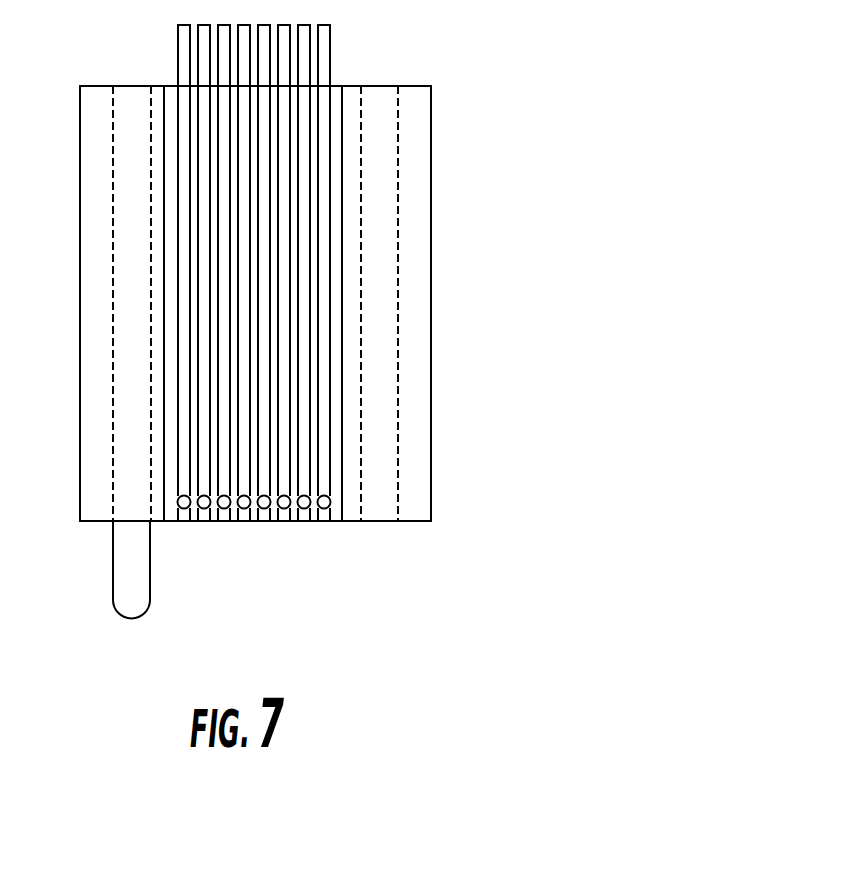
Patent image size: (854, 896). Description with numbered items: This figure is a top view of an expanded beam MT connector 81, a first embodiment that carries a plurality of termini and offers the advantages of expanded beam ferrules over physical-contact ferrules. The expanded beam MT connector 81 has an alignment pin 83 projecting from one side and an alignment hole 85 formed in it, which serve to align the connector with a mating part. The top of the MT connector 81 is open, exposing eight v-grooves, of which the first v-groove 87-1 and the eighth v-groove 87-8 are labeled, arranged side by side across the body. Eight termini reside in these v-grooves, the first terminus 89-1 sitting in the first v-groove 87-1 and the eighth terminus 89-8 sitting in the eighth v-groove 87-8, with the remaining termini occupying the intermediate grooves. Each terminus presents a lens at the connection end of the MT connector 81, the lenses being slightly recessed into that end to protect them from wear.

The expanded beam MT connector 81 is at (466, 220).
The alignment pin 83 is at (128, 563).
The alignment hole 85 is at (375, 495).
The v-groove 87-1 is at (185, 523).
The v-groove 87-8 is at (321, 526).
The terminus 89-1 is at (178, 108).
The terminus 89-8 is at (328, 114).